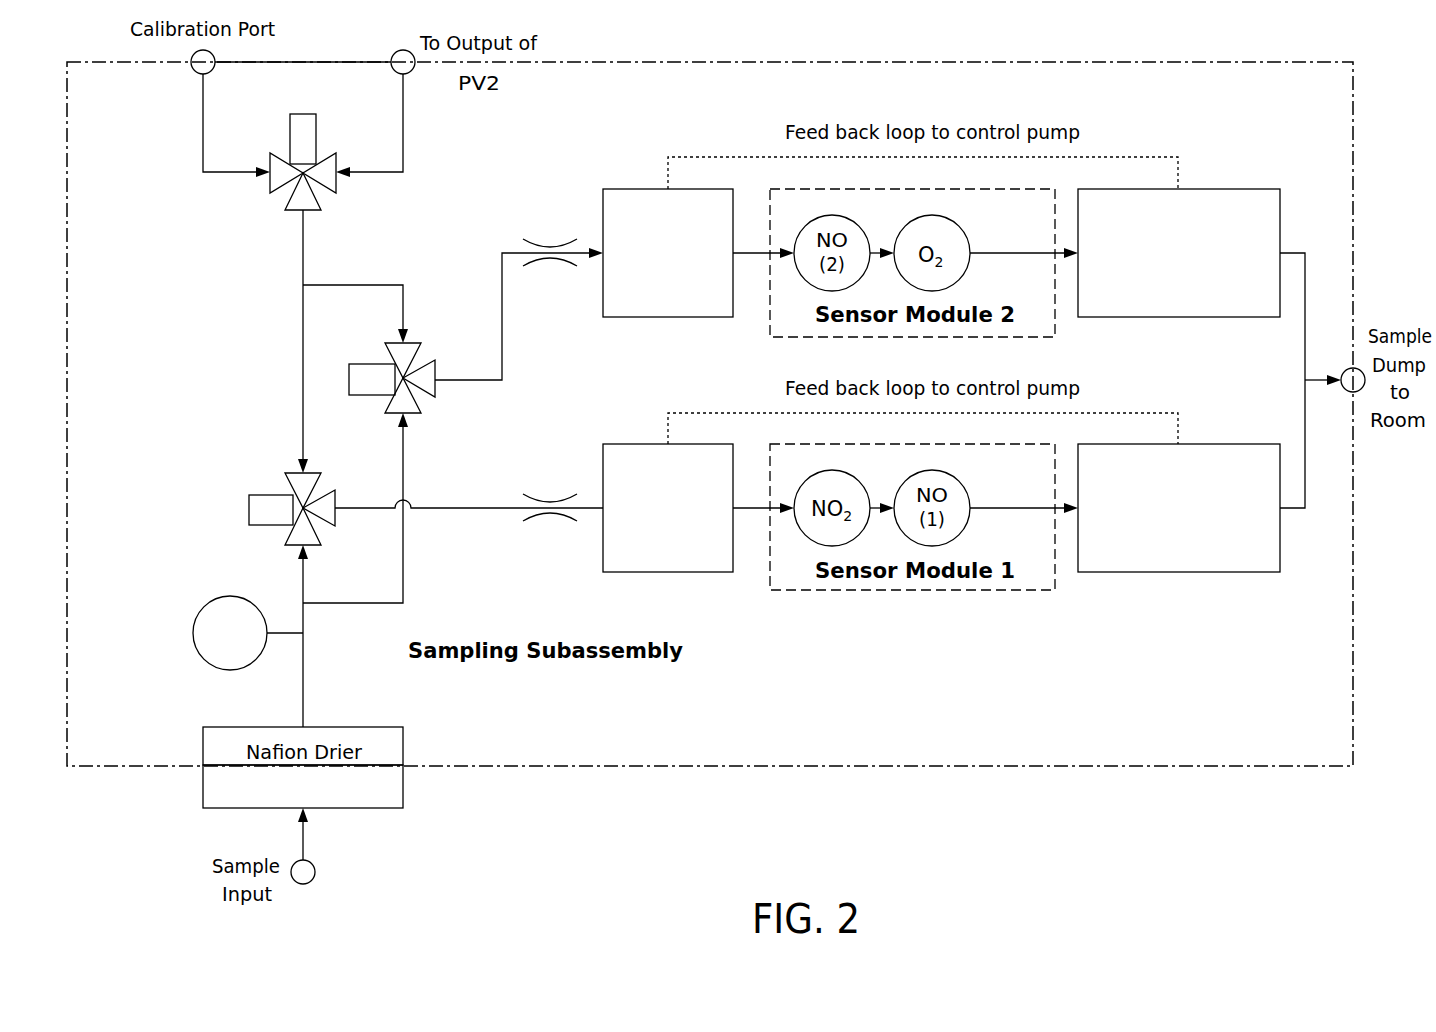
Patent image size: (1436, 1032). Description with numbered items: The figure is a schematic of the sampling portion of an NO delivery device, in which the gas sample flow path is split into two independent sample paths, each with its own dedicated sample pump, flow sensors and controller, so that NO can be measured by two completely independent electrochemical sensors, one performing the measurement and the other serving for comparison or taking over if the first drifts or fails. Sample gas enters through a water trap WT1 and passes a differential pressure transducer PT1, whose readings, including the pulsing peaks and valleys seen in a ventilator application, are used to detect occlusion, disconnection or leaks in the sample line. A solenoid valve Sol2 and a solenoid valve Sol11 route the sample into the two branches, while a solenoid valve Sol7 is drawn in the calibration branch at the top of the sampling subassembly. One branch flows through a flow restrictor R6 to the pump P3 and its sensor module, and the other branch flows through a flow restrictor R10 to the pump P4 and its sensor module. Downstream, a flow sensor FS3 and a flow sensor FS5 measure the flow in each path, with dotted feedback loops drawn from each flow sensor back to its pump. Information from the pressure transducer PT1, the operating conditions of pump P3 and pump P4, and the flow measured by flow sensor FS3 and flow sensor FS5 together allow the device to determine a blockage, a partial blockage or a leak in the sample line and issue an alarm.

The three-way solenoid valve Sol7 is at (316, 167).
The three-way solenoid valve Sol11 is at (417, 396).
The three-way solenoid valve Sol2 is at (308, 525).
The differential pressure transducer PT1 is at (191, 627).
The water trap WT1 is at (303, 786).
The flow restrictor R10 is at (554, 293).
The flow restrictor R6 is at (554, 549).
The pump P4 is at (668, 253).
The pump P3 is at (668, 508).
The flow sensor FS5 is at (1179, 253).
The flow sensor FS3 is at (1179, 508).